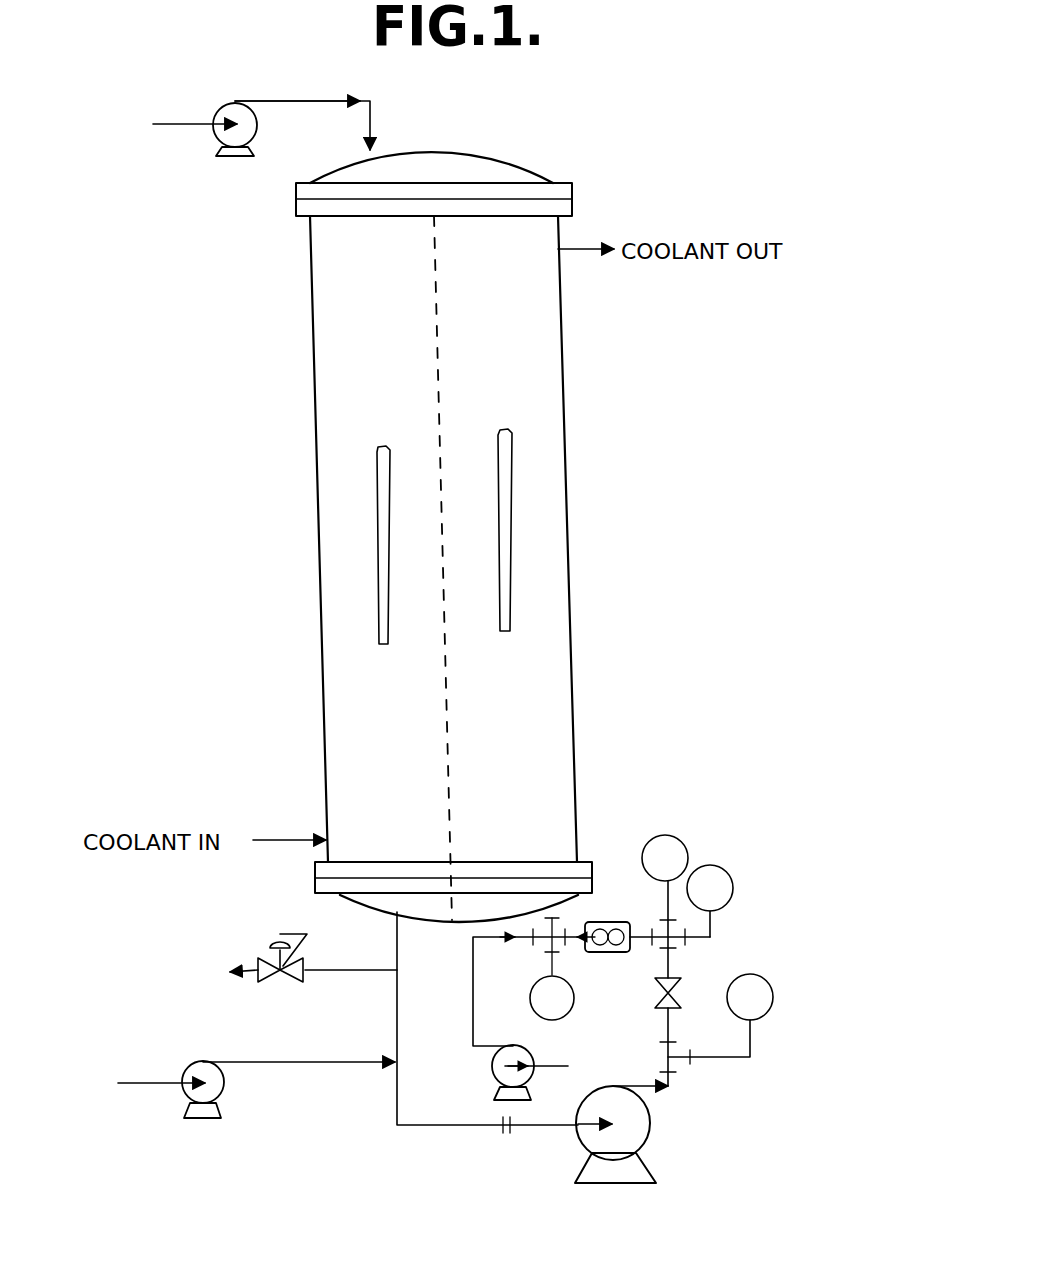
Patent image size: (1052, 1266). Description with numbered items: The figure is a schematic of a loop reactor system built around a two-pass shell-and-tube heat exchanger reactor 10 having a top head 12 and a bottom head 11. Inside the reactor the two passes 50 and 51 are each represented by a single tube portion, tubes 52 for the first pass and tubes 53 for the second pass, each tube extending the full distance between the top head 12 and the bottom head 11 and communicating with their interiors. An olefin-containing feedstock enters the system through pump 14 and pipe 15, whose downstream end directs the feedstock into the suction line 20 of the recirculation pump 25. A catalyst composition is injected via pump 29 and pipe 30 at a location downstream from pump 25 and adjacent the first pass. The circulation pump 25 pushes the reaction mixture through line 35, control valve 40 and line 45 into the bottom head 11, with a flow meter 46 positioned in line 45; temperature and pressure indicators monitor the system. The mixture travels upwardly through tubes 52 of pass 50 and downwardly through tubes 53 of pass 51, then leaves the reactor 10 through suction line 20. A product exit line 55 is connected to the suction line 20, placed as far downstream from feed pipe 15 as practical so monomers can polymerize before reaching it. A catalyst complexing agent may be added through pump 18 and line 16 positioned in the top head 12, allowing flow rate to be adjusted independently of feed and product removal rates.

The reactor 10 is at (435, 544).
The bottom head 11 is at (439, 915).
The top head 12 is at (478, 163).
The pump 14 is at (218, 1090).
The pipe 15 is at (336, 1065).
The line 16 is at (288, 100).
The pump 18 is at (225, 138).
The suction line 20 is at (450, 1128).
The recirculation pump 25 is at (650, 1123).
The pump 29 is at (515, 1054).
The pipe 30 is at (526, 940).
The line 35 is at (666, 1029).
The control valve 40 is at (673, 986).
The line 45 is at (643, 931).
The flow meter 46 is at (628, 953).
The pass 50 is at (550, 718).
The pass 51 is at (346, 698).
The tube portion 52 is at (505, 521).
The tube portion 53 is at (380, 536).
The product exit line 55 is at (333, 970).